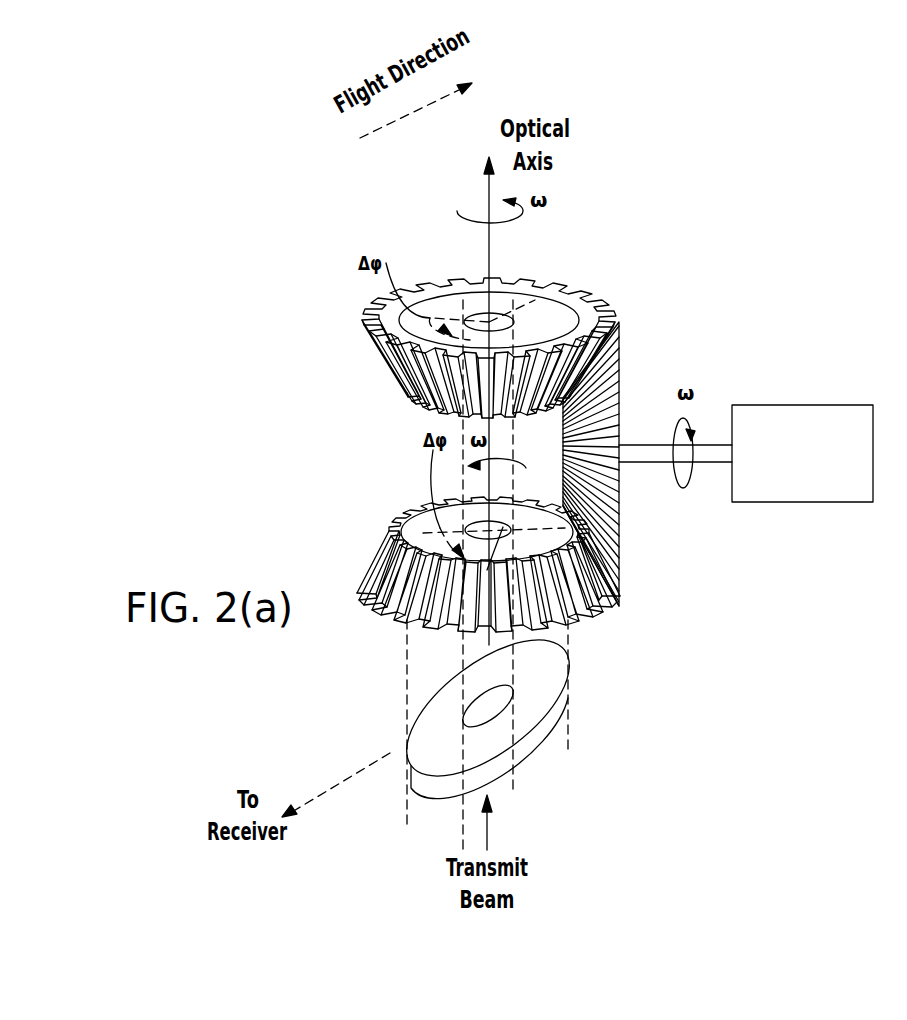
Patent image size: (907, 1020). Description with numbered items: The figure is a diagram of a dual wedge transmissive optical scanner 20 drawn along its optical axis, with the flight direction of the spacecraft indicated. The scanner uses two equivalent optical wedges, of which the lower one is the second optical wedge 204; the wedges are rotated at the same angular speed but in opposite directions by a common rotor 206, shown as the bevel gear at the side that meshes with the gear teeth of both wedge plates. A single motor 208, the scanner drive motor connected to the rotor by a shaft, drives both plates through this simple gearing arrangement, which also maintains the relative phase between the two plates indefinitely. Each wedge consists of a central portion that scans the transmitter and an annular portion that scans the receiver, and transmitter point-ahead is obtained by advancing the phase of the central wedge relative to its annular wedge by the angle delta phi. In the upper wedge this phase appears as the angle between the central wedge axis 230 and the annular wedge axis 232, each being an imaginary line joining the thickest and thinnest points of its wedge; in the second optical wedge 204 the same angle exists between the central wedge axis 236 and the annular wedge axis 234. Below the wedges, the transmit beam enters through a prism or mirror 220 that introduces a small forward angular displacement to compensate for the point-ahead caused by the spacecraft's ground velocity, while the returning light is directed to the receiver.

The transmissive optical scanner 20 is at (665, 296).
The second optical wedge 204 is at (397, 516).
The common rotor 206 is at (626, 375).
The motor 208 is at (807, 503).
The prism or mirror 220 is at (530, 740).
The central wedge axis 230 is at (523, 302).
The annular wedge axis 232 is at (463, 322).
The annular wedge axis 234 is at (478, 548).
The central wedge axis 236 is at (582, 522).